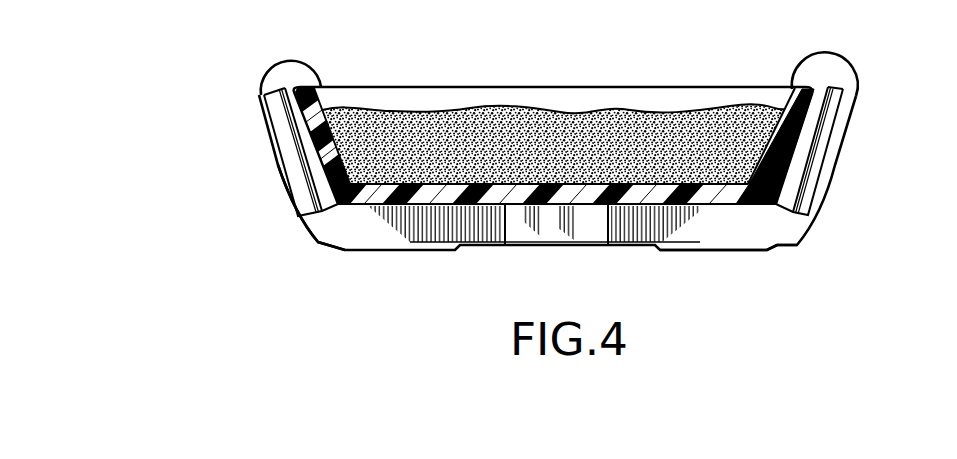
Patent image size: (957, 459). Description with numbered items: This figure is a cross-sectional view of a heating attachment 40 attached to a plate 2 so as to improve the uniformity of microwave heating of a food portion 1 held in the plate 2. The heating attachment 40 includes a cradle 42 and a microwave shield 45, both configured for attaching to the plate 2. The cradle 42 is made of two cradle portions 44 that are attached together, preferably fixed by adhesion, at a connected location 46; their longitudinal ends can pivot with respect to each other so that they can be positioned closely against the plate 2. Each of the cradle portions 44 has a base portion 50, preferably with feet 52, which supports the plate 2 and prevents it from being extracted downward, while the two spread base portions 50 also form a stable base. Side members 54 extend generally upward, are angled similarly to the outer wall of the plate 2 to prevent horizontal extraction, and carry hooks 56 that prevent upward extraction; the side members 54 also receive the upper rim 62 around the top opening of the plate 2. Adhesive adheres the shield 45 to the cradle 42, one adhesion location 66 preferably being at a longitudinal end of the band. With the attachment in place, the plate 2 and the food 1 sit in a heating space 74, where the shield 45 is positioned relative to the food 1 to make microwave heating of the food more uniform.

The food portion 1 is at (410, 126).
The plate 2 is at (837, 144).
The heating attachment 40 is at (799, 240).
The cradle 42 is at (327, 224).
The cradle portions 44 is at (397, 229).
The microwave shield 45 is at (296, 126).
The connected location 46 is at (570, 228).
The base portions 50 is at (645, 226).
The feet 52 is at (700, 237).
The side members 54 is at (306, 160).
The hooks 56 is at (299, 72).
The upper rim 62 is at (810, 94).
The adhesion location 66 is at (297, 184).
The heating space 74 is at (556, 127).